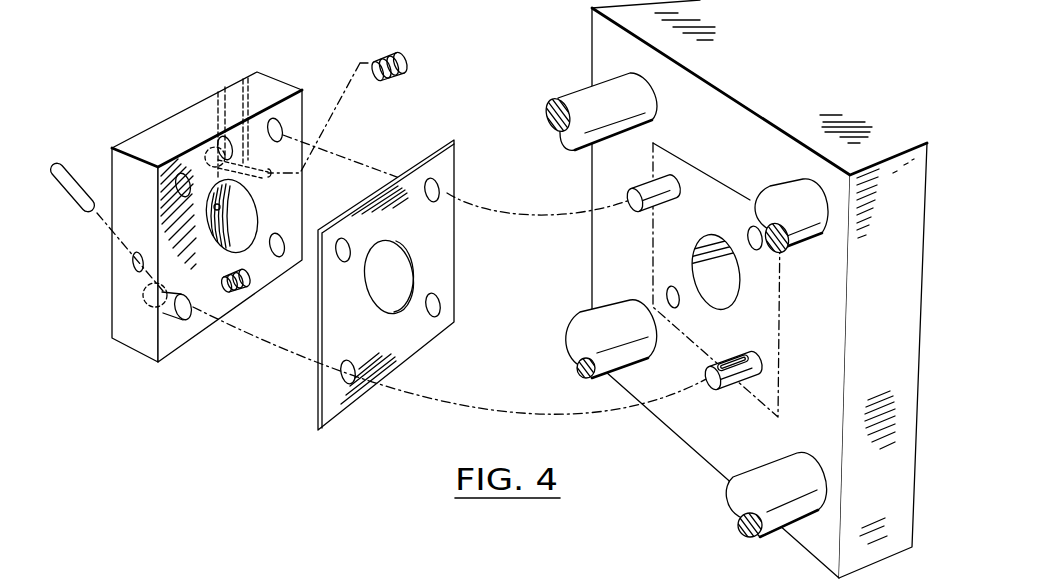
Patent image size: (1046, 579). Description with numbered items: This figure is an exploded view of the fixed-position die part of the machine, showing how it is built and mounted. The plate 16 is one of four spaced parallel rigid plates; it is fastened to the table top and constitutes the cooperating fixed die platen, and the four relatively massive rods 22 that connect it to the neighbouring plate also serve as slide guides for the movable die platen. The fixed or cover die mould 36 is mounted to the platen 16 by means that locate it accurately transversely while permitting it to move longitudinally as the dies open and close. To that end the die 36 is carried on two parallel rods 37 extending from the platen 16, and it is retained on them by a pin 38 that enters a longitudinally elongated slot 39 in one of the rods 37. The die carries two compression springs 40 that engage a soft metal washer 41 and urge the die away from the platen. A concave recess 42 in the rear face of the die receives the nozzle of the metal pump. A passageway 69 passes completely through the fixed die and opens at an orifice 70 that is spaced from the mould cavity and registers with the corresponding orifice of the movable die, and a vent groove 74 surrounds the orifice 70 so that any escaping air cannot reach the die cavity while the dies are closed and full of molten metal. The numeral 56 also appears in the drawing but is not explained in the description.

The plate 16 is at (788, 72).
The rods 22 is at (576, 96).
The fixed or cover die mould 36 is at (132, 147).
The parallel rods 37 is at (665, 182).
The pin 38 is at (72, 193).
The longitudinally elongated slot 39 is at (737, 362).
The compression springs 40 is at (396, 58).
The soft metal washer 41 is at (347, 397).
The concave recess 42 is at (238, 212).
The element 56 is at (293, 572).
The passageway 69 is at (258, 163).
The orifice 70 is at (210, 160).
The vent groove 74 is at (217, 107).